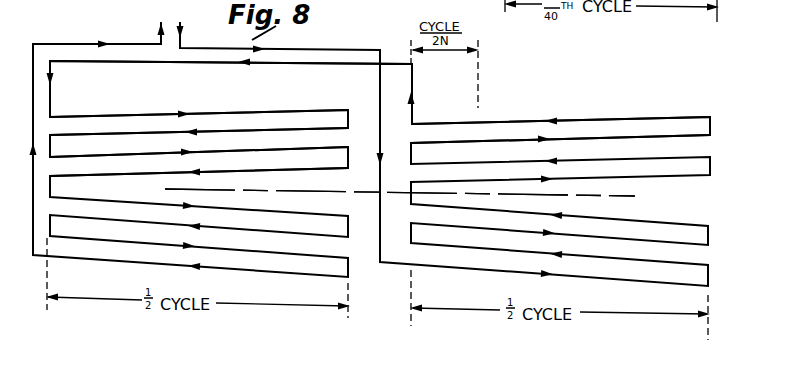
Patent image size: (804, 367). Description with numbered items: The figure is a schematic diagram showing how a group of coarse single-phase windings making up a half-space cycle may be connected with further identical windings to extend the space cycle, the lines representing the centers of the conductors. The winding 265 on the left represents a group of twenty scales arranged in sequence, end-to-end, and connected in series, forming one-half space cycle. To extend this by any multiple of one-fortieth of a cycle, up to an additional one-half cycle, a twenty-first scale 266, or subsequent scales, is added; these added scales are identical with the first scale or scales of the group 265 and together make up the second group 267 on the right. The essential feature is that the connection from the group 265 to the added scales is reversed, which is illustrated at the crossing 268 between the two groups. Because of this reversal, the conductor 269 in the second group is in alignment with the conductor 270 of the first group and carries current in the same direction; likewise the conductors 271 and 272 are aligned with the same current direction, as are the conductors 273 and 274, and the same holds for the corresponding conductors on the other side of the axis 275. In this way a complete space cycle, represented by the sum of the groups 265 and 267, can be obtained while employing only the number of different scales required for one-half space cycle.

The winding 265 is at (150, 115).
The twenty-first scale 266 is at (428, 120).
The group 267 is at (628, 104).
The reversal of connection 268 is at (377, 66).
The conductor 269 is at (688, 153).
The conductor 270 is at (292, 169).
The conductor 271 is at (654, 140).
The conductor 272 is at (327, 149).
The conductor 273 is at (510, 121).
The conductor 274 is at (300, 130).
The axis 275 is at (315, 193).